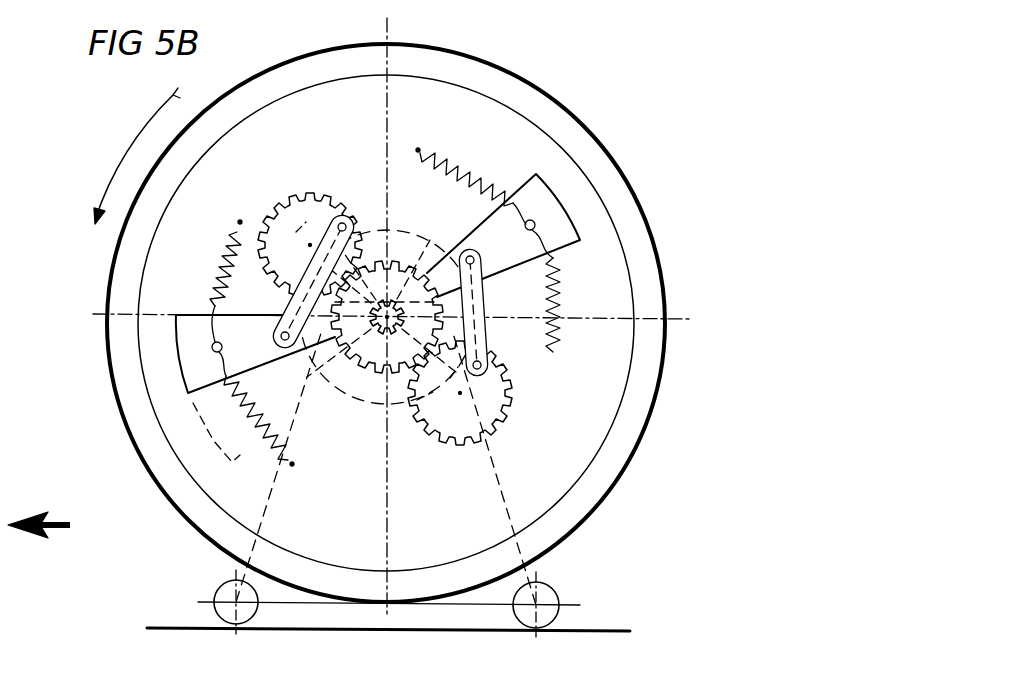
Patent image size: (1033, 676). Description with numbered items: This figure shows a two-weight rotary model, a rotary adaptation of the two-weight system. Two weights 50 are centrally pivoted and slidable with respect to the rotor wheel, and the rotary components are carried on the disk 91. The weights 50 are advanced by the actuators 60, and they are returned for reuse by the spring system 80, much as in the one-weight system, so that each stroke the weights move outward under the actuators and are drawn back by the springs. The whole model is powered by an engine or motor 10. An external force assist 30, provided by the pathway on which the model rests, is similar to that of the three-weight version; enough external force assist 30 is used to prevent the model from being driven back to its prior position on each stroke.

The engine or motor 10 is at (412, 228).
The disk 91 is at (600, 138).
The weights 50 is at (548, 208).
The actuators 60 is at (508, 420).
The spring system 80 is at (553, 352).
The external force assist 30 is at (217, 600).